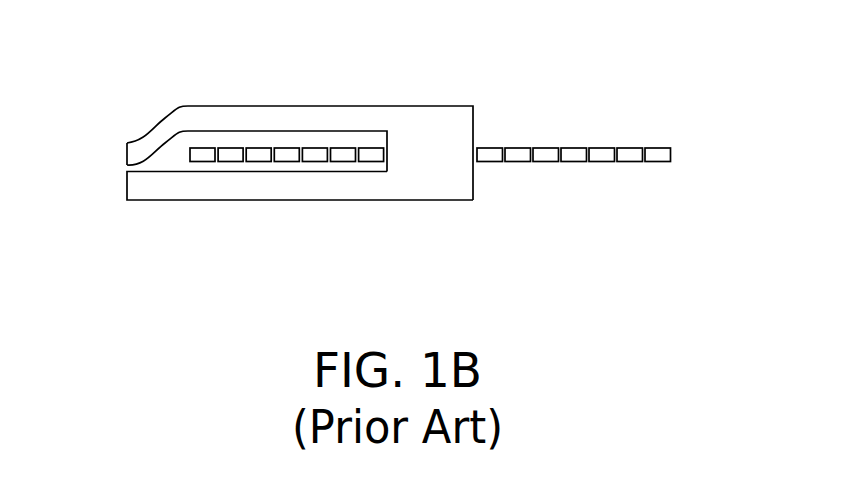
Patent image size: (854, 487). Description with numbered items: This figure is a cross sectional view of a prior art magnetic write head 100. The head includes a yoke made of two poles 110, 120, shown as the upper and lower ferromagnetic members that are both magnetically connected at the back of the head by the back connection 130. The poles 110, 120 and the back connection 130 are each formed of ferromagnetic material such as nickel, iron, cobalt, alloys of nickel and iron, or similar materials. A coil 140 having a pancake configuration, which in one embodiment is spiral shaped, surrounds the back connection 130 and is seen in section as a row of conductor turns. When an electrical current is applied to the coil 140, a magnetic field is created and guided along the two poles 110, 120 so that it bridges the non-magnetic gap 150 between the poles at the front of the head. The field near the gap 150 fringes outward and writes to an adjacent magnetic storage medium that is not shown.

The connector plug 100 is at (395, 182).
The pole 110 is at (127, 150).
The pole 120 is at (320, 193).
The back connection 130 is at (427, 137).
The coil 140 is at (517, 162).
The non-magnetic gap 150 is at (127, 171).